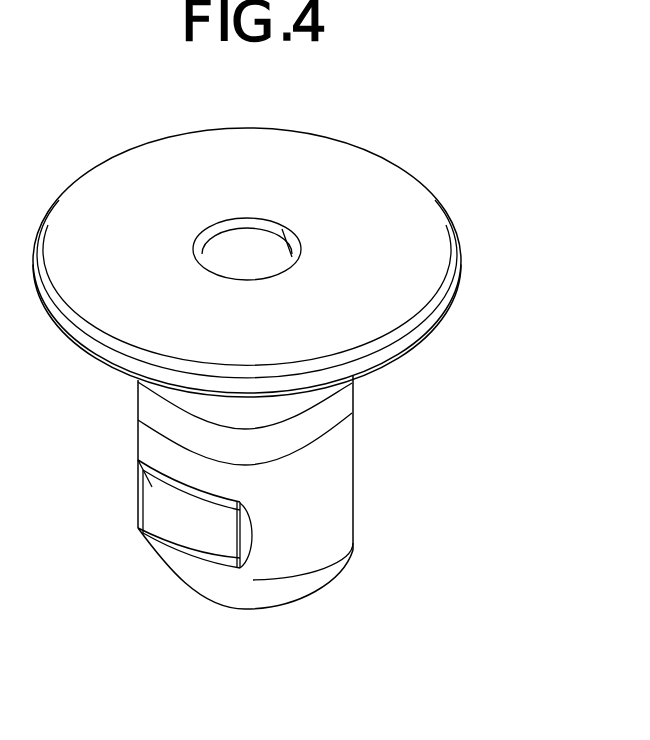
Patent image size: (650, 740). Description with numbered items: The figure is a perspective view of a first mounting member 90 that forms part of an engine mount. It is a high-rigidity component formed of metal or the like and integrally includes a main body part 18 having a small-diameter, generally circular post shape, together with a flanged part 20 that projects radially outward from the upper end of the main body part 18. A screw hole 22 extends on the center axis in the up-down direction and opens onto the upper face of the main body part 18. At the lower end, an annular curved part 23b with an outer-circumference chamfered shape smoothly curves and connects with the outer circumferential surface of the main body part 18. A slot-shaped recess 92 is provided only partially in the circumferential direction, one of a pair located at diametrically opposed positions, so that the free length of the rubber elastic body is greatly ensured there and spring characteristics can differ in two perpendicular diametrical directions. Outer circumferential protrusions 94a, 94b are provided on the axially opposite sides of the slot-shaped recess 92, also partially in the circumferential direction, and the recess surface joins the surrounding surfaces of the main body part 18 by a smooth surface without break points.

The first mounting member 90 is at (463, 160).
The flanged part 20 is at (117, 182).
The screw hole 22 is at (281, 250).
The main body part 18 is at (323, 493).
The annular curved part 23b is at (283, 596).
The slot-shaped recess 92 is at (140, 531).
The outer circumferential protrusion 94a is at (157, 453).
The outer circumferential protrusion 94b is at (170, 560).